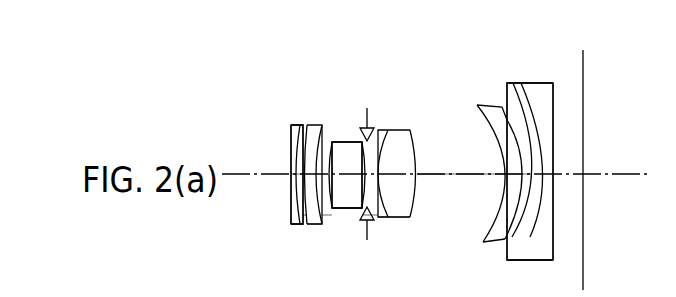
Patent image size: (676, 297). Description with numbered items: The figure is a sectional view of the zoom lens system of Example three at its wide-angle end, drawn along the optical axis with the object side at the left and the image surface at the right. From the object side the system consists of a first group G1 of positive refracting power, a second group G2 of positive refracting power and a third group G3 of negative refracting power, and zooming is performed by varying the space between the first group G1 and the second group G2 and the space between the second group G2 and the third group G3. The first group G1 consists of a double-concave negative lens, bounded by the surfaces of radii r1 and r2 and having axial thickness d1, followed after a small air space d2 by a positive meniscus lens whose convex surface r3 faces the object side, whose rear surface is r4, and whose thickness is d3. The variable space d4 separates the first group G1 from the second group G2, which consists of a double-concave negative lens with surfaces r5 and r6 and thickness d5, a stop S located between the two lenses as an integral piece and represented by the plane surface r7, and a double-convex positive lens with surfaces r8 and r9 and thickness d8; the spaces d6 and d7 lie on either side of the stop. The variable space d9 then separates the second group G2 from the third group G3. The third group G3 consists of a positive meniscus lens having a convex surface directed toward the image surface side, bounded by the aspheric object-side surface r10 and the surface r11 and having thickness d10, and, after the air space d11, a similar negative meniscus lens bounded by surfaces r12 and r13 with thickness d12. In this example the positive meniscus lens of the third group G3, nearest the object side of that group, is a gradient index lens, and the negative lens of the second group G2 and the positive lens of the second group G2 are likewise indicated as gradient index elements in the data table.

The first group G1 is at (322, 57).
The second group G2 is at (410, 57).
The third group G3 is at (548, 53).
The radius of curvature of first lens surface r1 is at (291, 150).
The radius of curvature of second lens surface r2 is at (297, 127).
The radius of curvature of third lens surface r3 is at (308, 127).
The radius of curvature of fourth lens surface r4 is at (323, 138).
The radius of curvature of fifth lens surface r5 is at (335, 143).
The radius of curvature of sixth lens surface r6 is at (362, 142).
The stop r7 is at (372, 142).
The radius of curvature of eighth lens surface r8 is at (388, 142).
The radius of curvature of ninth lens surface r9 is at (412, 148).
The radius of curvature of tenth lens surface r10 is at (480, 122).
The radius of curvature of eleventh lens surface r11 is at (503, 118).
The radius of curvature of twelfth lens surface r12 is at (518, 110).
The radius of curvature of thirteenth lens surface r13 is at (553, 105).
The space between first and second lens surfaces d1 is at (297, 182).
The space between second and third lens surfaces d2 is at (306, 222).
The space between third and fourth lens surfaces d3 is at (323, 226).
The space between fourth and fifth lens surfaces d4 is at (328, 217).
The space between fifth and sixth lens surfaces d5 is at (347, 193).
The space between sixth and seventh lens surfaces d6 is at (364, 218).
The space between seventh and eighth lens surfaces d7 is at (377, 220).
The space between eighth and ninth lens surfaces d8 is at (394, 197).
The space between ninth and tenth lens surfaces d9 is at (461, 191).
The space between tenth and eleventh lens surfaces d10 is at (503, 197).
The space between eleventh and twelfth lens surfaces d11 is at (512, 237).
The space between twelfth and thirteenth lens surfaces d12 is at (530, 252).